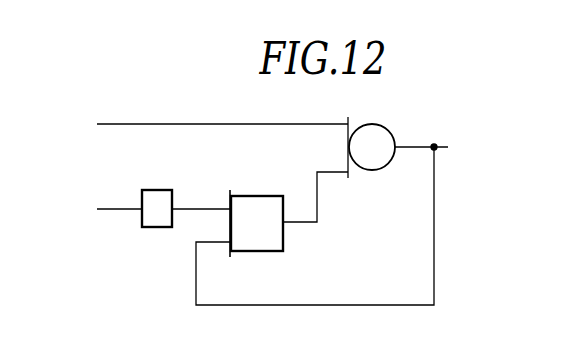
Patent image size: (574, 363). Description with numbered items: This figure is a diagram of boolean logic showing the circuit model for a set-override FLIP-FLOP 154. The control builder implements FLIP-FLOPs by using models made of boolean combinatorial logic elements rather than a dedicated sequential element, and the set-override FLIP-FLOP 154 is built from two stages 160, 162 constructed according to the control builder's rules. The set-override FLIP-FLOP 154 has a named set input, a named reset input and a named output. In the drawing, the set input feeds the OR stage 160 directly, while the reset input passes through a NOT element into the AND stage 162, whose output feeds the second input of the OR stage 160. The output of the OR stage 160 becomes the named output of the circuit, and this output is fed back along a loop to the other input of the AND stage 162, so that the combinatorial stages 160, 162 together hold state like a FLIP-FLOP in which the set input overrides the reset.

The set-override FLIP-FLOP circuit model 154 is at (270, 201).
The stage 160 is at (384, 128).
The stage 162 is at (278, 252).